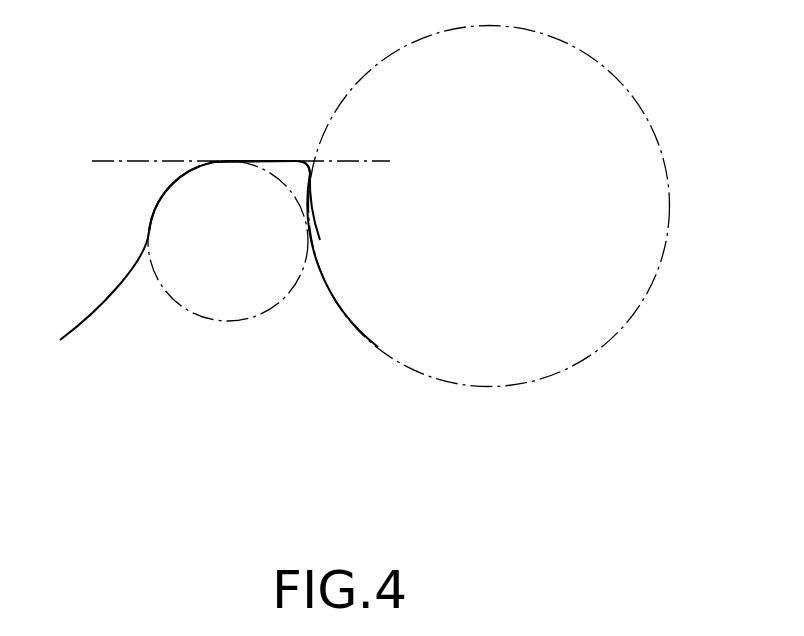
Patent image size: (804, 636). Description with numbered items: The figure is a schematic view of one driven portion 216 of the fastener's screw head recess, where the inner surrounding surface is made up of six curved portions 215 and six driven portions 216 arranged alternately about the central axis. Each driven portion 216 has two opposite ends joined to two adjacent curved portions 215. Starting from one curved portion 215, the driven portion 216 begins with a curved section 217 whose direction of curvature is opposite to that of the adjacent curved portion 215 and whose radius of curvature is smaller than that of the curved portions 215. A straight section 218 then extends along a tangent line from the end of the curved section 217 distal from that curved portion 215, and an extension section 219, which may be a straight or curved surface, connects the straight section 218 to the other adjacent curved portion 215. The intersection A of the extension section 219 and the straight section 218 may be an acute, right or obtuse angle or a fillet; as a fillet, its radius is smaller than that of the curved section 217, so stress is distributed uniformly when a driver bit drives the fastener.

The curved portion 215 is at (95, 317).
The driven portion 216 is at (276, 128).
The curved section 217 is at (168, 187).
The straight section 218 is at (253, 162).
The extension section 219 is at (310, 190).
The intersection A is at (300, 140).